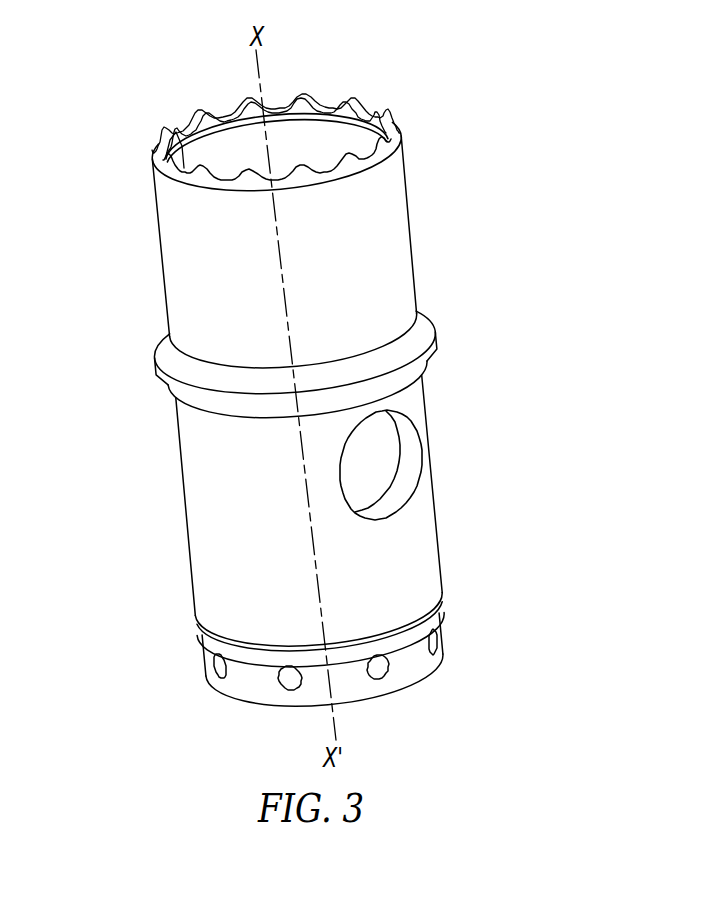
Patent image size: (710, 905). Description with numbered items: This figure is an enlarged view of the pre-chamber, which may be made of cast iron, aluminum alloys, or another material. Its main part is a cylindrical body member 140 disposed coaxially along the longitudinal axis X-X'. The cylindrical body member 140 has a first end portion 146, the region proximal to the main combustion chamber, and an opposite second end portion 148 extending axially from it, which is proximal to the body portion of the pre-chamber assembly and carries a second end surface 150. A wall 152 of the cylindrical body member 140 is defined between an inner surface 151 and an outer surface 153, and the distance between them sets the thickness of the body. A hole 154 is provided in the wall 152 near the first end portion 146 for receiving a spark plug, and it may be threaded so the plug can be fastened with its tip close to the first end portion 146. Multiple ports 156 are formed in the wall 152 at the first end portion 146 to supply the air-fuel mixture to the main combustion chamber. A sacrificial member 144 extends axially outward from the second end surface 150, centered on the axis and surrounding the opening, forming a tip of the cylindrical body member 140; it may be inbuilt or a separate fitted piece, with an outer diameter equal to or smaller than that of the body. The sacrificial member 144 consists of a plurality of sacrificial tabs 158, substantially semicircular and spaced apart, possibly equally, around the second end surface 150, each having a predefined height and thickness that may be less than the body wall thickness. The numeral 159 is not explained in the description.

The cylindrical body member 140 is at (620, 152).
The sacrificial member 144 is at (388, 50).
The first end portion 146 is at (498, 608).
The second end portion 148 is at (458, 247).
The second end surface 150 is at (160, 153).
The inner surface 151 is at (183, 156).
The wall 152 is at (190, 305).
The outer surface 153 is at (176, 210).
The hole 154 is at (450, 441).
The ports 156 is at (428, 728).
The sacrificial tabs 158 is at (248, 170).
The inner surface 159 is at (447, 170).